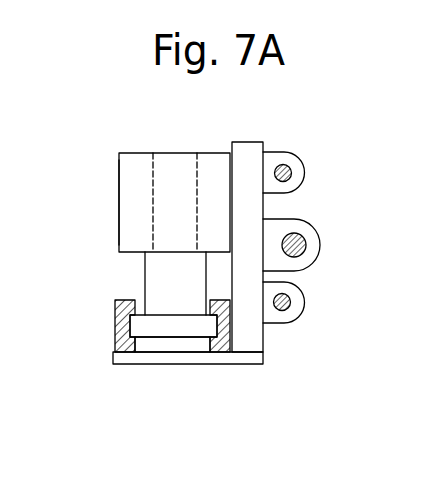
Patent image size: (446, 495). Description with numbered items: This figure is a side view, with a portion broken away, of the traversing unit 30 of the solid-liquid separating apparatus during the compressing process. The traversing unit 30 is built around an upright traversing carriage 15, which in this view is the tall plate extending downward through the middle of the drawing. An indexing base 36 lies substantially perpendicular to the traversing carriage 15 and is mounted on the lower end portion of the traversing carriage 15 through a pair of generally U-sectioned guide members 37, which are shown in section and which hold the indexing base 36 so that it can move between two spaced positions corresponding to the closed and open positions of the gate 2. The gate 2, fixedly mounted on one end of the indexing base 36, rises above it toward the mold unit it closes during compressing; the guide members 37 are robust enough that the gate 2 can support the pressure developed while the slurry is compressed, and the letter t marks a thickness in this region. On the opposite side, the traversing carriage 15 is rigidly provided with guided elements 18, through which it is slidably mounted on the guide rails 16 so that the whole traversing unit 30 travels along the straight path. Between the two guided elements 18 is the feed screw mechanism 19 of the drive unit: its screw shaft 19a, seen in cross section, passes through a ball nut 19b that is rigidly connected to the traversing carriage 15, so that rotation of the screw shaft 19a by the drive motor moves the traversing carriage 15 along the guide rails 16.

The traversing unit 30 is at (135, 146).
The thickness t is at (130, 197).
The gate 2 is at (160, 268).
The indexing base 36 is at (172, 323).
The guide members 37 is at (216, 350).
The traversing carriage 15 is at (244, 339).
The guide rails 16 is at (292, 165).
The guided elements 18 is at (287, 153).
The feed screw mechanism 19 is at (348, 240).
The screw shaft 19a is at (302, 250).
The ball nut 19b is at (302, 225).